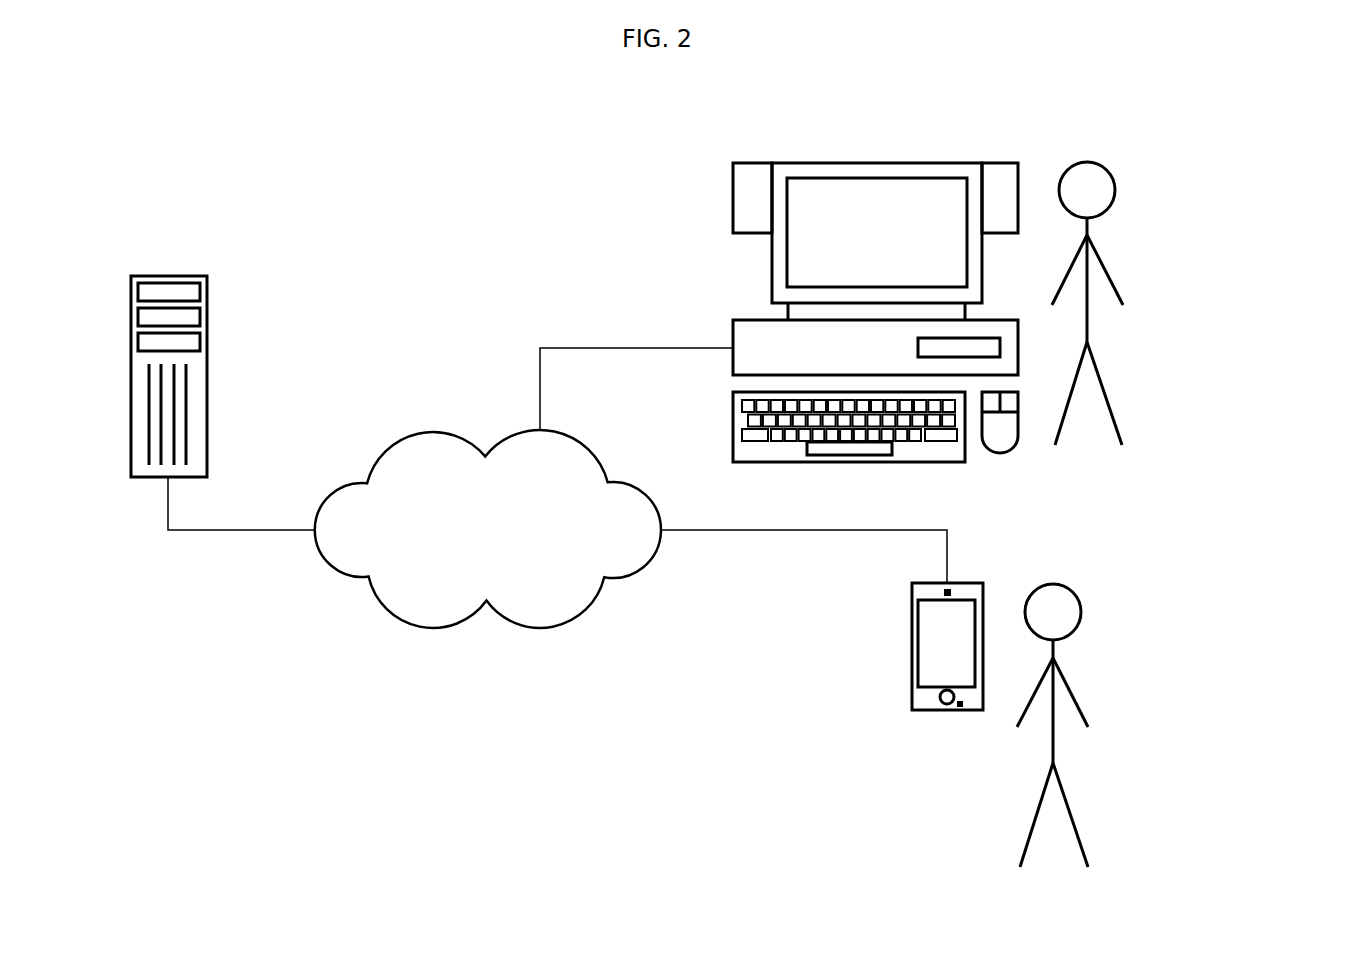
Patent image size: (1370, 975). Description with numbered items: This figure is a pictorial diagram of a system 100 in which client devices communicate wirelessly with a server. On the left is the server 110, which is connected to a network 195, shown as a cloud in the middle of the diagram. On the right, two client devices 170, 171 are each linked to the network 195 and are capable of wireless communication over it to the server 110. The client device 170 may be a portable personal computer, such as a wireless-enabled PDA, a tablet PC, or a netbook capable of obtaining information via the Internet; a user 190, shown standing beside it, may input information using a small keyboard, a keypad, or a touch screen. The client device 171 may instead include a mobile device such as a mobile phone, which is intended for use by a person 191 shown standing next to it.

The system 100 is at (1351, 50).
The server 110 is at (131, 285).
The network 195 is at (437, 432).
The client device 170 is at (772, 266).
The client device 171 is at (912, 604).
The user 190 is at (1113, 250).
The person 191 is at (1080, 657).